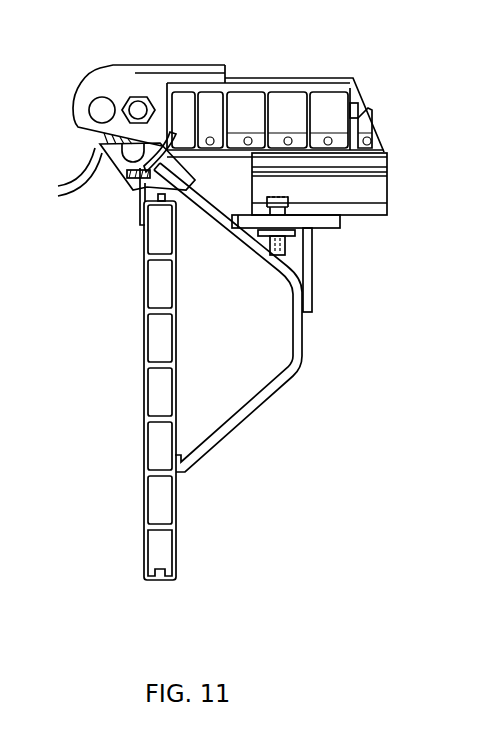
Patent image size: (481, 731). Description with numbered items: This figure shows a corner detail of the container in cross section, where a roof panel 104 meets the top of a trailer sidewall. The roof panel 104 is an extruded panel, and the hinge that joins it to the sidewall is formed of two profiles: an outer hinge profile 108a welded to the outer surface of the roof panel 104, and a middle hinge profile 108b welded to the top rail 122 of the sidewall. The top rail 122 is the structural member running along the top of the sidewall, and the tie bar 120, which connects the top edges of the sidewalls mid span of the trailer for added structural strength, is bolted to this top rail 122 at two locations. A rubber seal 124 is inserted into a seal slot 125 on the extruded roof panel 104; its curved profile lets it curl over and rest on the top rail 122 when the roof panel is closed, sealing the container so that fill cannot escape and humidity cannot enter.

The roof panel 104 is at (291, 100).
The outer hinge profile 108a is at (140, 63).
The middle hinge profile 108b is at (98, 153).
The tie bar 120 is at (375, 190).
The top rail 122 is at (260, 408).
The rubber seal 124 is at (117, 173).
The seal slot 125 is at (180, 142).